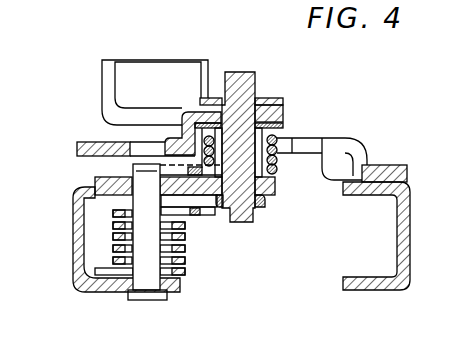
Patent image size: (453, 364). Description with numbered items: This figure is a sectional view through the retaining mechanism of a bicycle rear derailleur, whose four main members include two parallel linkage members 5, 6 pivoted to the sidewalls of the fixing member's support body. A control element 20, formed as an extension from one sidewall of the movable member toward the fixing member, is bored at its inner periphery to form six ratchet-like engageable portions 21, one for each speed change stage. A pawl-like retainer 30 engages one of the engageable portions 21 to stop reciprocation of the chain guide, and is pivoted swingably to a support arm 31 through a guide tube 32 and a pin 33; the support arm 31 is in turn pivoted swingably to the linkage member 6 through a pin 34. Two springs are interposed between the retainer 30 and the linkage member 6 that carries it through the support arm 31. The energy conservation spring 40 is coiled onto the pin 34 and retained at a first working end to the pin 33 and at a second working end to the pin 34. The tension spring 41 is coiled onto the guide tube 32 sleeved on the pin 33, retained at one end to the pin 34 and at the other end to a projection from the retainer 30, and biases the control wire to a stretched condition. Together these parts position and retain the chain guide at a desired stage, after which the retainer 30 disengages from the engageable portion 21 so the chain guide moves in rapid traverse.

The linkage member 5 is at (406, 243).
The linkage member 6 is at (75, 275).
The control element 20 is at (92, 143).
The engageable portion 21 is at (310, 142).
The retainer 30 is at (187, 109).
The support arm 31 is at (193, 187).
The guide tube 32 is at (263, 98).
The pin 33 is at (243, 72).
The pin 34 is at (152, 300).
The energy conservation spring 40 is at (182, 260).
The tension spring 41 is at (273, 168).